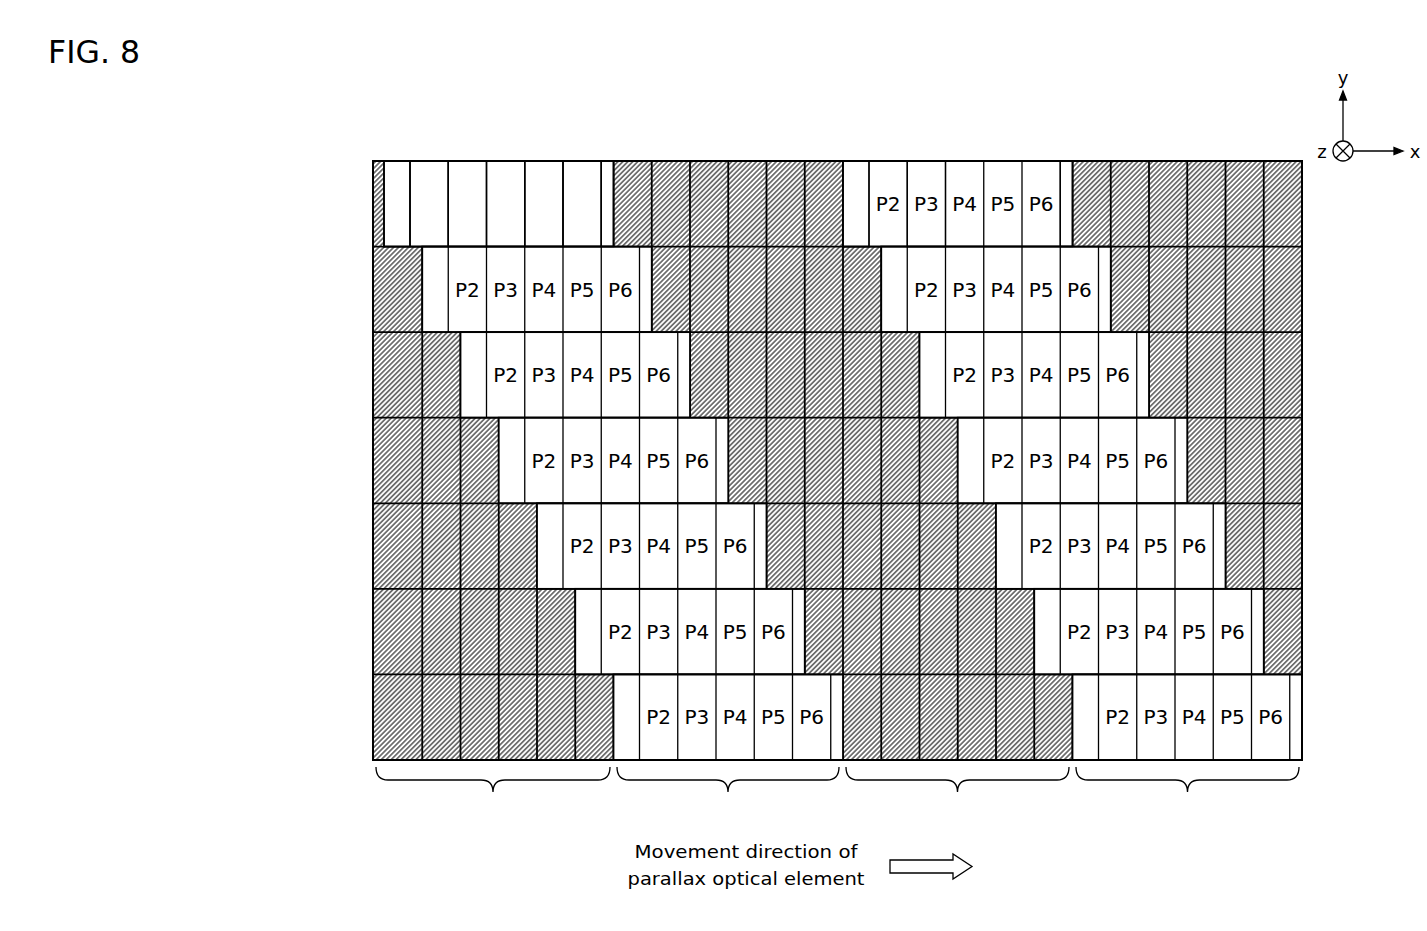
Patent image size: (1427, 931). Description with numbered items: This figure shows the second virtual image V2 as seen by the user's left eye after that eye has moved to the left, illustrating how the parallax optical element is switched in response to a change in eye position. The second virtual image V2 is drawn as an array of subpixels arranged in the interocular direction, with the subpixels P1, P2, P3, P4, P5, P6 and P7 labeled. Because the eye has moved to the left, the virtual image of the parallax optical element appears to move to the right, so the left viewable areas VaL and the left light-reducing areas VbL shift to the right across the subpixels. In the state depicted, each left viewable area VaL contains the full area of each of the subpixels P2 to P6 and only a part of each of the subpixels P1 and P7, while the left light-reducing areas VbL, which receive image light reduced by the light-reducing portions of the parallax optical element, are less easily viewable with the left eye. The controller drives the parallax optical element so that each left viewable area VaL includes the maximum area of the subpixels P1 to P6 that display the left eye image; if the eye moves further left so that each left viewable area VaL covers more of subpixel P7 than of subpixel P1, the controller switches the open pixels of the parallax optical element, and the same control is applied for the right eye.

The subpixel P1 is at (397, 150).
The subpixel P2 is at (429, 204).
The subpixel P3 is at (467, 204).
The subpixel P4 is at (506, 204).
The subpixel P5 is at (544, 204).
The subpixel P6 is at (582, 204).
The subpixel P7 is at (608, 150).
The second virtual image V2 is at (923, 161).
The left light-reducing area VbL is at (722, 797).
The left viewable area VaL is at (958, 797).